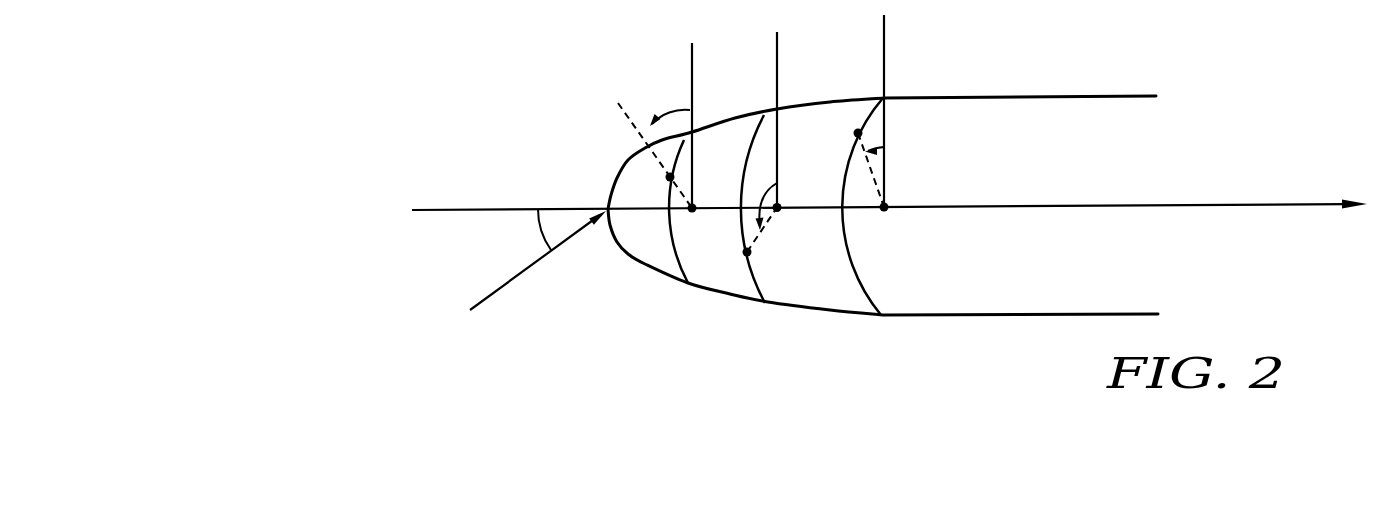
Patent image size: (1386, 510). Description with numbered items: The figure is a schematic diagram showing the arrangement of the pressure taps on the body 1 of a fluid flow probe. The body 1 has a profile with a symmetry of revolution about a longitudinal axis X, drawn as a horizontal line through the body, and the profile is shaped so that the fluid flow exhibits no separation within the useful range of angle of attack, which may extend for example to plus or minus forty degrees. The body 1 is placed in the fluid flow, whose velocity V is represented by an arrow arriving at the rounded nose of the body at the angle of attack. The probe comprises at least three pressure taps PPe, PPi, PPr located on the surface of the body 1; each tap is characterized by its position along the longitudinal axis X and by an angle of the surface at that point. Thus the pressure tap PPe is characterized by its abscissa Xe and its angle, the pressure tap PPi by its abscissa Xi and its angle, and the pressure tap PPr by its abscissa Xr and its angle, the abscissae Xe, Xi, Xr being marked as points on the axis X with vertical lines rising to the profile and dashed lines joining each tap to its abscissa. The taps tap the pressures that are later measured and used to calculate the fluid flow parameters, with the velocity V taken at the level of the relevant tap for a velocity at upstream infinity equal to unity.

The body 1 is at (1012, 93).
The longitudinal axis X is at (889, 187).
The abscissa of pressure tap PPe Xe is at (699, 149).
The abscissa of pressure tap PPi Xi is at (785, 143).
The abscissa of pressure tap PPr Xr is at (895, 135).
The pressure tap PPe is at (660, 172).
The pressure tap PPi is at (744, 255).
The pressure tap PPr is at (855, 126).
The velocity of the flow V is at (495, 262).